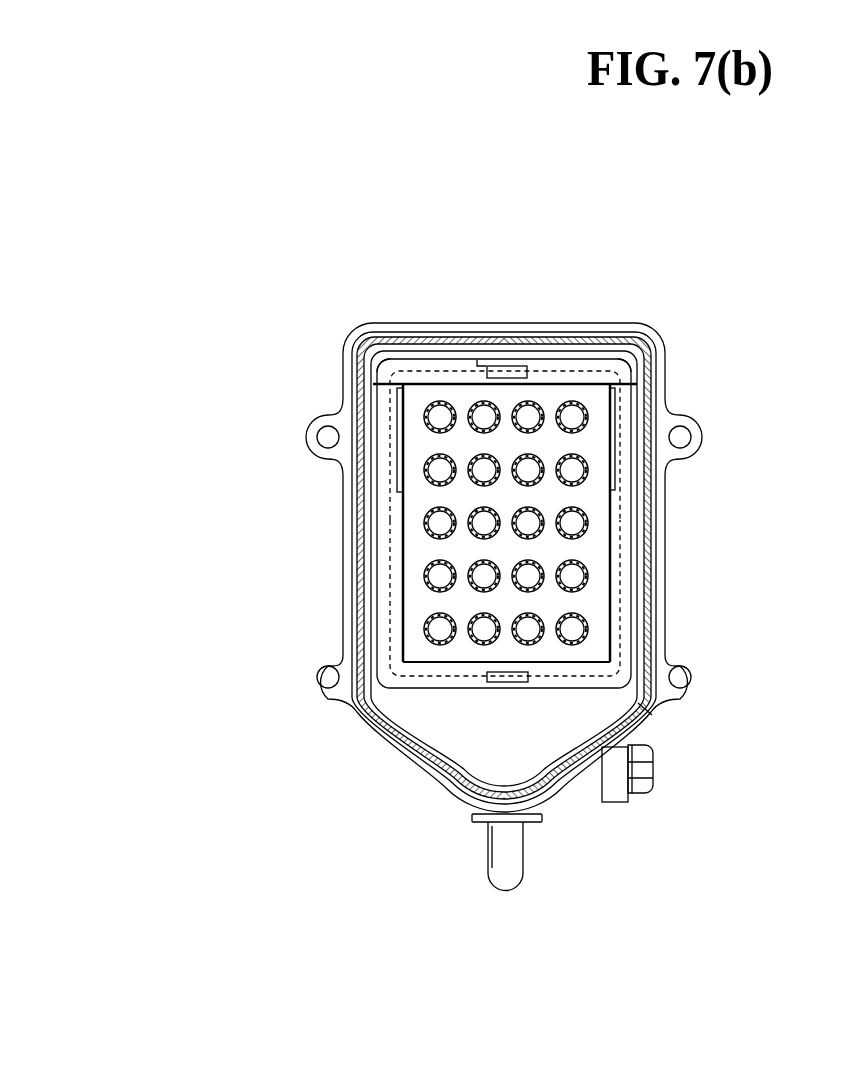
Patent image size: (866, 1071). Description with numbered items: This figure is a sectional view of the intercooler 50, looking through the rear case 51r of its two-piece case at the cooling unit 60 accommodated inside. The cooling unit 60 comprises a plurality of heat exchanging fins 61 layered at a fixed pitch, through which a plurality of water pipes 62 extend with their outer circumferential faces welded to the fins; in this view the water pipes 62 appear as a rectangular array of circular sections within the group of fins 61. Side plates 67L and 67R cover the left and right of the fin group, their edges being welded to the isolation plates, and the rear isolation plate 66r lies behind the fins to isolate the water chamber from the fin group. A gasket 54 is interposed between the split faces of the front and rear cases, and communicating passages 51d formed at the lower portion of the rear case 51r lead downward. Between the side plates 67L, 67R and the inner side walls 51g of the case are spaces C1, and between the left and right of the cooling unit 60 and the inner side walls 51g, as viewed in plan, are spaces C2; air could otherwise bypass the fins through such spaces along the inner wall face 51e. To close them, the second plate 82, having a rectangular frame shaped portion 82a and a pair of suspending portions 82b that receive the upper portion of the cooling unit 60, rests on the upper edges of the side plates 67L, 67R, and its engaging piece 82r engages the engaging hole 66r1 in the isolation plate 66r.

The intercooler 50 is at (725, 442).
The communicating passage 51d is at (480, 728).
The inner wall face of the case 51e is at (428, 358).
The inner side wall of the case 51g is at (367, 494).
The rear case 51r is at (667, 498).
The gasket 54 is at (398, 733).
The cooling unit 60 is at (562, 693).
The heat exchanging fin 61 is at (493, 533).
The water pipe 62 is at (425, 405).
The isolation plate 66r is at (645, 710).
The engaging hole 66r1 is at (482, 365).
The side plate 67L is at (612, 565).
The side plate 67R is at (400, 566).
The second plate 82 is at (588, 378).
The rectangular frame shaped portion 82a is at (357, 357).
The suspending portion 82b is at (398, 447).
The engaging piece 82r is at (507, 365).
The space C1 is at (385, 601).
The space C2 is at (385, 392).